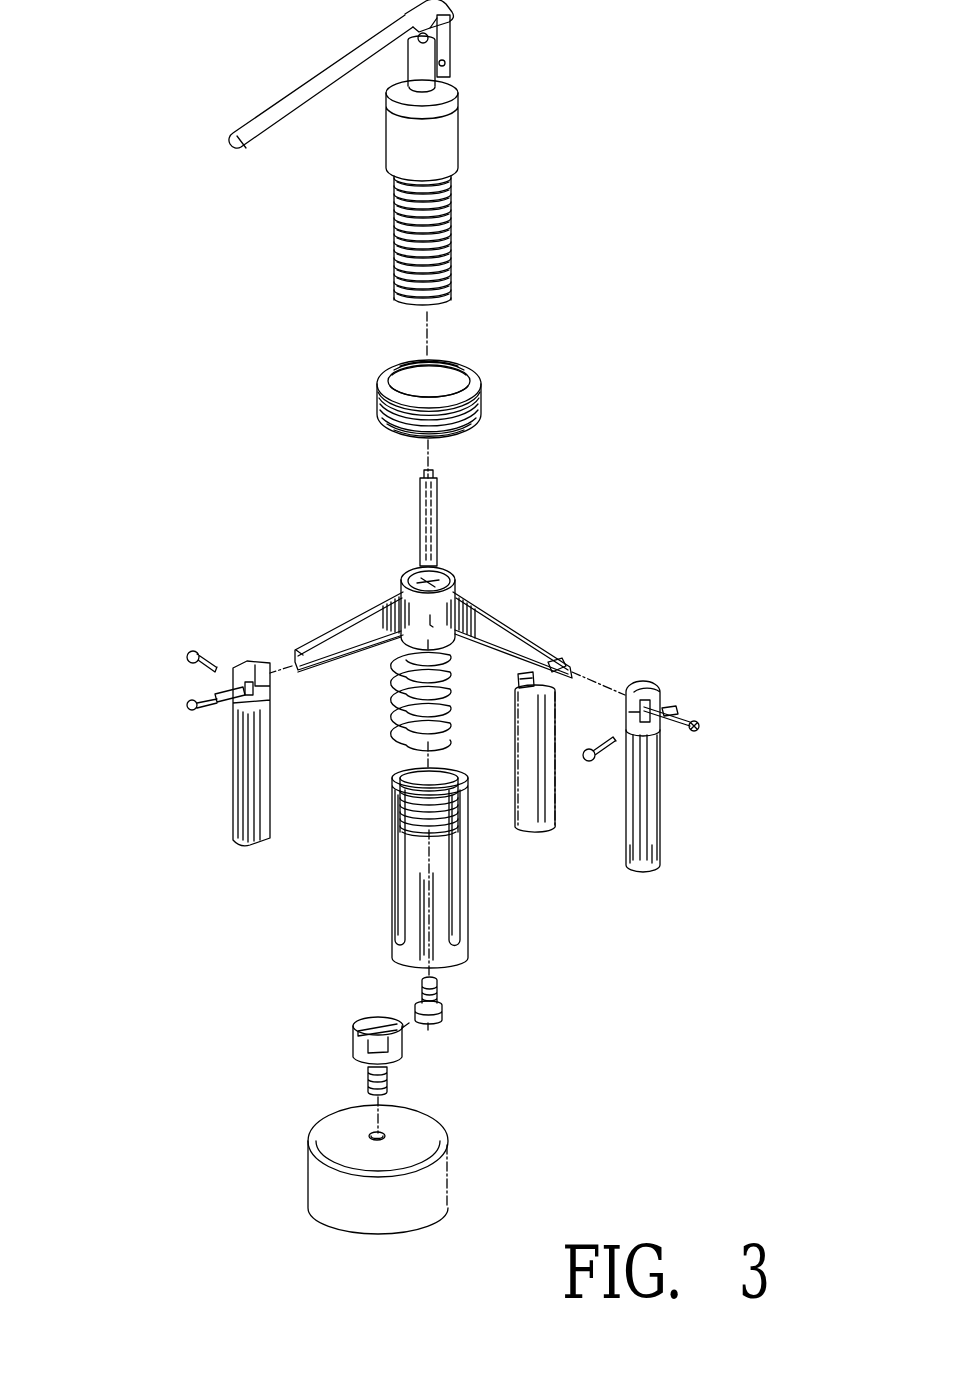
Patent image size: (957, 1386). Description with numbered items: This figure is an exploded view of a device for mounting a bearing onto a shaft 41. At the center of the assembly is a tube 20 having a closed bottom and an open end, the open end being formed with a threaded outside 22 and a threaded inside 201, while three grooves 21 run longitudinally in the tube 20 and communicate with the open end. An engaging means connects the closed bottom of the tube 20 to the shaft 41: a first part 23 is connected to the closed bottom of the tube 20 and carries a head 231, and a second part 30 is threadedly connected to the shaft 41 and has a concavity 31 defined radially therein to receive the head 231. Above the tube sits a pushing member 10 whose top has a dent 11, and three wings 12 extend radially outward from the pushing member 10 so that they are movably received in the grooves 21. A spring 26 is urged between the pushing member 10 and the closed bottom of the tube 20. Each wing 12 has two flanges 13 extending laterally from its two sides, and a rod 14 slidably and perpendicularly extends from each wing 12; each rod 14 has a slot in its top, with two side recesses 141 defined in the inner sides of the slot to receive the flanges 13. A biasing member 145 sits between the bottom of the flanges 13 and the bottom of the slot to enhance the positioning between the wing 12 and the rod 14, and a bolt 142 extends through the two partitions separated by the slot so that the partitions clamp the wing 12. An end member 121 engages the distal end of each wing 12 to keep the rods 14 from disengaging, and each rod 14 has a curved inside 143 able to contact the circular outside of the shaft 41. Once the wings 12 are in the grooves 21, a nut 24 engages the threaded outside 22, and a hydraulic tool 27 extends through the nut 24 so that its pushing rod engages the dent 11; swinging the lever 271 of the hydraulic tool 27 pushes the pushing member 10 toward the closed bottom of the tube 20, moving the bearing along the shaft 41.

The pushing member 10 is at (493, 610).
The dent 11 is at (434, 583).
The wings 12 is at (358, 632).
The flanges 13 is at (340, 658).
The rods 14 is at (664, 786).
The side recesses 141 is at (663, 712).
The bolt 142 is at (590, 763).
The curved inside 143 is at (630, 867).
The biasing member 145 is at (224, 700).
The end member 121 is at (700, 720).
The tube 20 is at (447, 876).
The threaded inside 201 is at (420, 793).
The grooves 21 is at (455, 913).
The threaded outside 22 is at (448, 813).
The first part 23 is at (438, 1000).
The head 231 is at (445, 1010).
The nut 24 is at (468, 417).
The spring 26 is at (452, 708).
The hydraulic tool 27 is at (432, 146).
The lever 271 is at (298, 102).
The second part 30 is at (368, 1056).
The concavity 31 is at (353, 1053).
The shaft 41 is at (430, 1190).